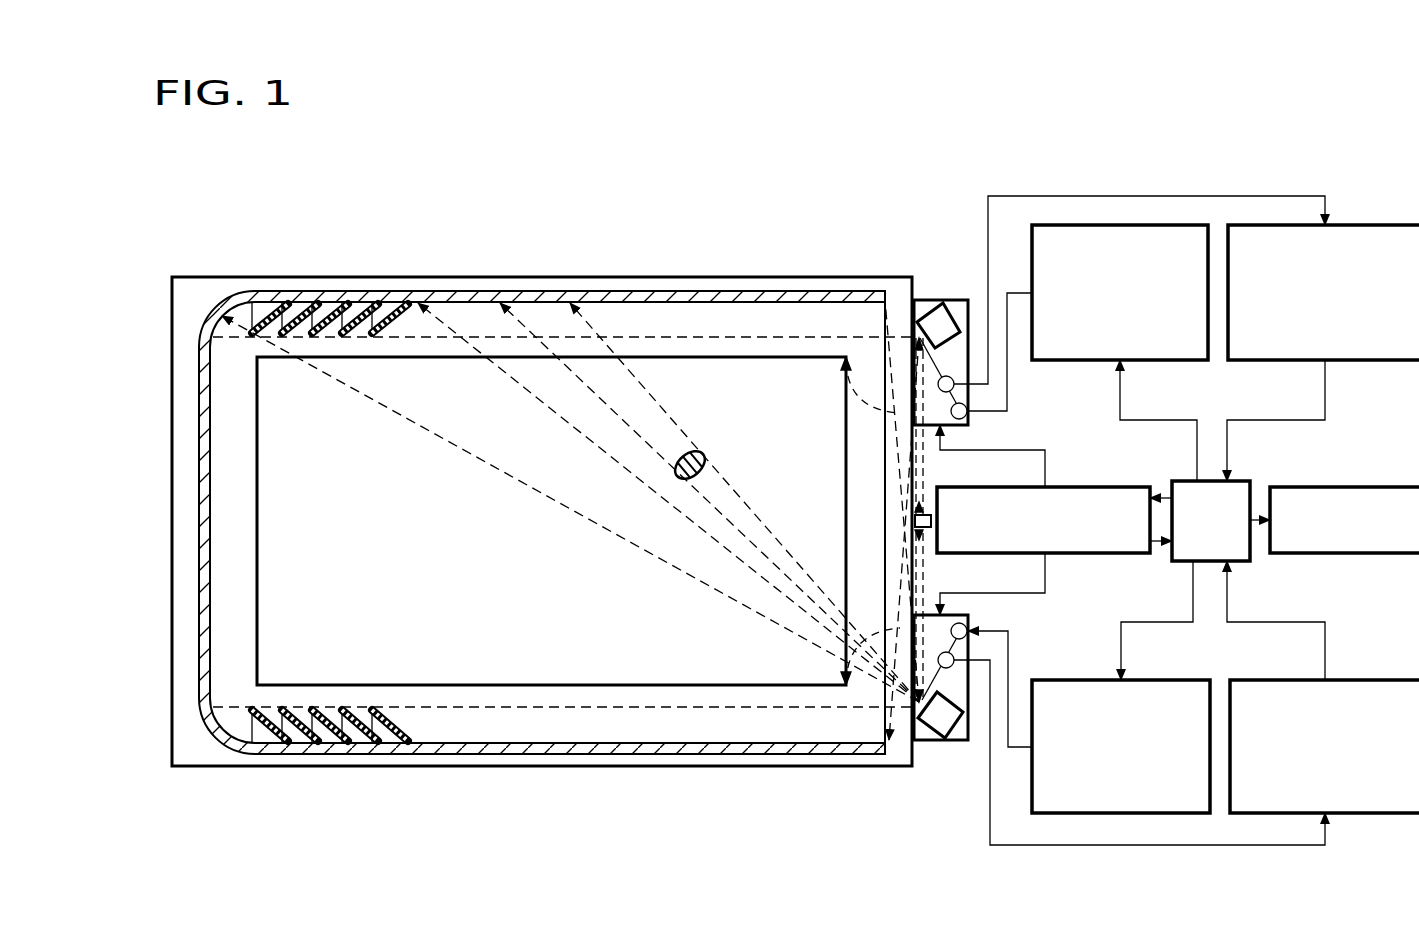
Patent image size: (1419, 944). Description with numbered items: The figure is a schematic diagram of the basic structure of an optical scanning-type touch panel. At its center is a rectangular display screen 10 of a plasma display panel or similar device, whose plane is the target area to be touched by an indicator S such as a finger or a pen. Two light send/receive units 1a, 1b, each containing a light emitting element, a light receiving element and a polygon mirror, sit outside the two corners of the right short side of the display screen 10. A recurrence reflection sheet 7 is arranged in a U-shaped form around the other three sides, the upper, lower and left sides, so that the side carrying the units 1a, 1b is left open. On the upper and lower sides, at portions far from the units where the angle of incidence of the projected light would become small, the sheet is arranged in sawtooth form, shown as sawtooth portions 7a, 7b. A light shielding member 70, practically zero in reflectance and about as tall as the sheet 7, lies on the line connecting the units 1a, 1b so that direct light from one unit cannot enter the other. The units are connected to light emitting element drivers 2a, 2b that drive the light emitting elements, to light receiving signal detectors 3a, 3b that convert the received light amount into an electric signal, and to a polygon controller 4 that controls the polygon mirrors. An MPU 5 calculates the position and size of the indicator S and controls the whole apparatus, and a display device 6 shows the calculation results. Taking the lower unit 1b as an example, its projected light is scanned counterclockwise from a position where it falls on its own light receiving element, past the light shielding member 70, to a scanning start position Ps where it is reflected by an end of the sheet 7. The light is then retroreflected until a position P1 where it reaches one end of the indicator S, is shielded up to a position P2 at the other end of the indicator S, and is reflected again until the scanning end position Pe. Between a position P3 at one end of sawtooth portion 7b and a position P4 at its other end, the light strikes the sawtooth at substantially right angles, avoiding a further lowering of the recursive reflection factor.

The light send/receive unit 1a is at (935, 300).
The light send/receive unit 1b is at (938, 740).
The light emitting element driver 2a is at (1088, 362).
The light emitting element driver 2b is at (1150, 680).
The light receiving signal detector 3a is at (1373, 225).
The light receiving signal detector 3b is at (1360, 680).
The polygon controller 4 is at (1083, 553).
The MPU 5 is at (1180, 481).
The display device 6 is at (1355, 487).
The recurrence reflection sheet 7 is at (470, 757).
The sawtooth portion of recurrence reflection sheet 7a is at (413, 775).
The sawtooth portion of recurrence reflection sheet 7b is at (413, 270).
The display screen 10 is at (690, 665).
The light shielding member 70 is at (915, 520).
The indicator S is at (700, 462).
The position where projected light reaches one end of the indicator P1 is at (647, 387).
The position where projected light reaches the other end of the indicator P2 is at (593, 395).
The position at one end of the sawtooth portion 7b P3 is at (493, 368).
The position at the other end of the sawtooth portion 7b P4 is at (437, 437).
The scanning start position Ps is at (897, 437).
The scanning end position Pe is at (470, 707).